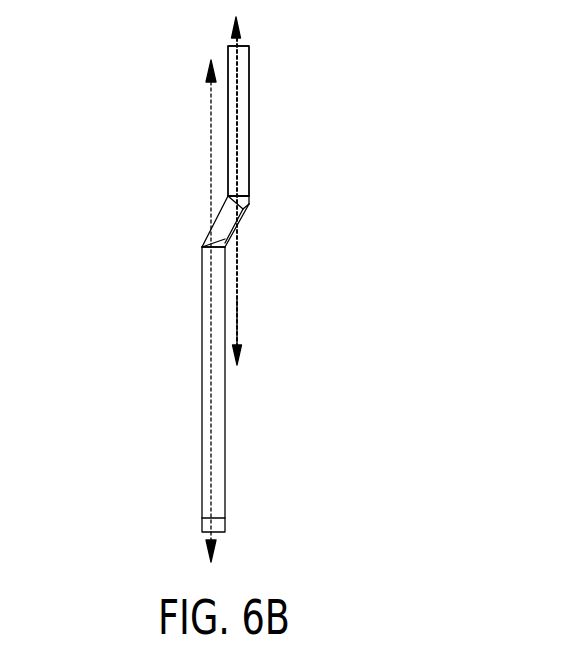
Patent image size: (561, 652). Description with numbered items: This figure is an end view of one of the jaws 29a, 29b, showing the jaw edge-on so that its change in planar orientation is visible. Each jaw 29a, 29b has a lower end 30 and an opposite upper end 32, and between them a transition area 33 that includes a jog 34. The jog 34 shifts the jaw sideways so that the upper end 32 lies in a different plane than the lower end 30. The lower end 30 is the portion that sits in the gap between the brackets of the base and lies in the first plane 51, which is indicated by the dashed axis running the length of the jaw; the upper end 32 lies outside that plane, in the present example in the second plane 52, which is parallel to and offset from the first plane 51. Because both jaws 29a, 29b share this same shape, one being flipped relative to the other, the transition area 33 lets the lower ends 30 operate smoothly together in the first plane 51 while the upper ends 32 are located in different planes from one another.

The first jaw 29a is at (327, 103).
The second jaw 29b is at (238, 121).
The lower end 30 is at (238, 532).
The upper end 32 is at (175, 80).
The transition area 33 is at (258, 268).
The jog 34 is at (218, 225).
The first plane 51 is at (208, 152).
The second plane 52 is at (241, 73).